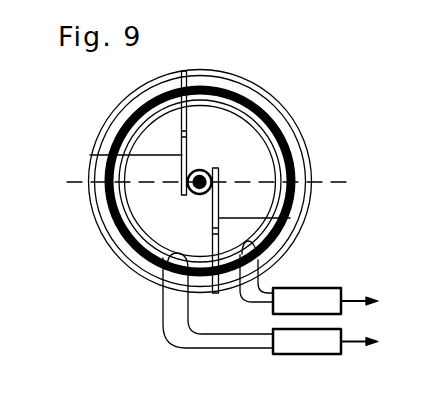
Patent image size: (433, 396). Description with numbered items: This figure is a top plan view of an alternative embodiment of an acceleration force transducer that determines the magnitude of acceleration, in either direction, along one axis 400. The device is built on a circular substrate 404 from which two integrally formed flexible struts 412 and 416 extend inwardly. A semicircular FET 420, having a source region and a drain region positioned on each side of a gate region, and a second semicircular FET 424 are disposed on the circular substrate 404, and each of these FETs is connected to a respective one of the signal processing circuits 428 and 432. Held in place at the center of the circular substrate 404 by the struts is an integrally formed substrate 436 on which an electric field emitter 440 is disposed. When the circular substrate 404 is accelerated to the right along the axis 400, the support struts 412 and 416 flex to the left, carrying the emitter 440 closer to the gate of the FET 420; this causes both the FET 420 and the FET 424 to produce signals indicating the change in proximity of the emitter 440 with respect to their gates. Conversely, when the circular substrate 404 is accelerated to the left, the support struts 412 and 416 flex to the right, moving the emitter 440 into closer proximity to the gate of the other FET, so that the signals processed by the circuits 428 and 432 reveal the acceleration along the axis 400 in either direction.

The axis 400 is at (339, 183).
The circular substrate 404 is at (112, 119).
The flexible strut 412 is at (90, 155).
The flexible strut 416 is at (290, 218).
The semicircular FET 420 is at (100, 211).
The semicircular FET 424 is at (298, 144).
The signal processing circuit 428 is at (304, 354).
The signal processing circuit 432 is at (313, 288).
The integrally formed substrate 436 is at (203, 169).
The electric field emitter 440 is at (211, 172).